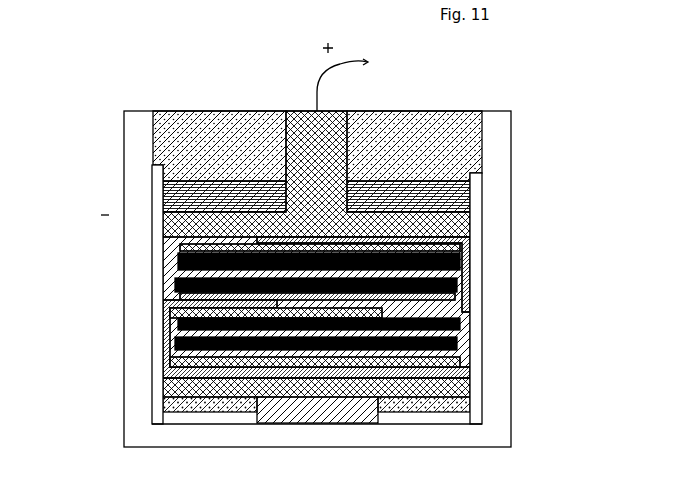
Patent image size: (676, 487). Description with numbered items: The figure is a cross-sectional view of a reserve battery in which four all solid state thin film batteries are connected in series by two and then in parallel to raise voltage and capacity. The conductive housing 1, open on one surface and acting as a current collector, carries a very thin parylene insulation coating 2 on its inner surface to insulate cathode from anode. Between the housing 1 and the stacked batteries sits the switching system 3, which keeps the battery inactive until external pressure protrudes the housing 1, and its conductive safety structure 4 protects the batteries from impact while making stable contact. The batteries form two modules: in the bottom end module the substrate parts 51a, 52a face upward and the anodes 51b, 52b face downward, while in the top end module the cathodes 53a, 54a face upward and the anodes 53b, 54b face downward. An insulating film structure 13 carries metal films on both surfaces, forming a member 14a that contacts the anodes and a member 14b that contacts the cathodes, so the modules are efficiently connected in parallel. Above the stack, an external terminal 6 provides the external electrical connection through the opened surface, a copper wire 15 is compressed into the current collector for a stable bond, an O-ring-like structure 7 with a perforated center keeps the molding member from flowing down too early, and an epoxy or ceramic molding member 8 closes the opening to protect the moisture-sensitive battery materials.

The housing 1 is at (497, 435).
The insulation coating 2 is at (478, 395).
The switching system 3 is at (465, 407).
The safety structure 4 is at (470, 382).
The external terminal 6 is at (470, 218).
The structure having a perforated center 7 is at (470, 182).
The molding member 8 is at (470, 136).
The insulating film structure 13 is at (470, 252).
The member for contacting the anodes 14a is at (165, 372).
The member for contacting the cathodes 14b is at (468, 240).
The copper wire 15 is at (330, 74).
The substrate part of bottom end module 51a is at (466, 338).
The anode of bottom end module 51b is at (466, 357).
The substrate part of bottom end module 52a is at (178, 325).
The anode of bottom end module 52b is at (178, 340).
The cathode of top end module 53a is at (466, 282).
The anode of top end module 53b is at (466, 302).
The cathode of top end module 54a is at (178, 261).
The anode of top end module 54b is at (178, 279).